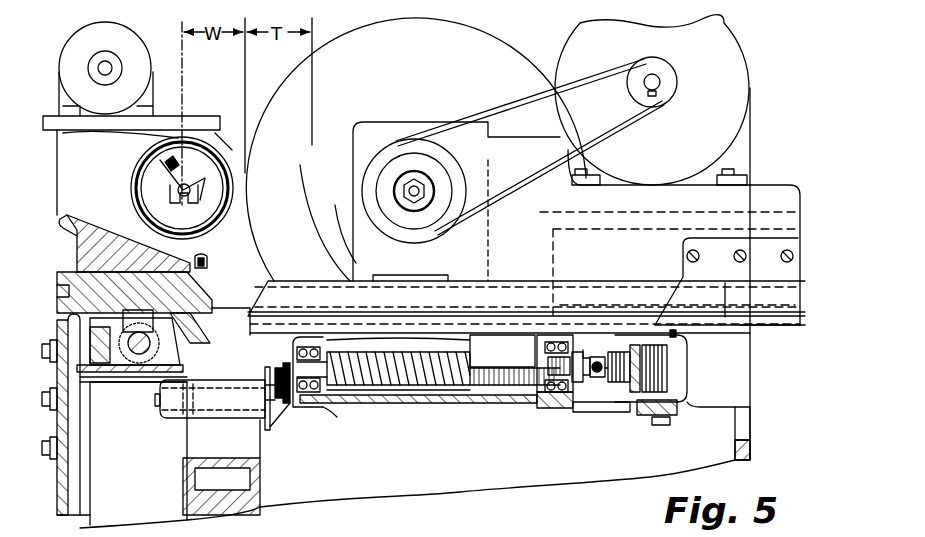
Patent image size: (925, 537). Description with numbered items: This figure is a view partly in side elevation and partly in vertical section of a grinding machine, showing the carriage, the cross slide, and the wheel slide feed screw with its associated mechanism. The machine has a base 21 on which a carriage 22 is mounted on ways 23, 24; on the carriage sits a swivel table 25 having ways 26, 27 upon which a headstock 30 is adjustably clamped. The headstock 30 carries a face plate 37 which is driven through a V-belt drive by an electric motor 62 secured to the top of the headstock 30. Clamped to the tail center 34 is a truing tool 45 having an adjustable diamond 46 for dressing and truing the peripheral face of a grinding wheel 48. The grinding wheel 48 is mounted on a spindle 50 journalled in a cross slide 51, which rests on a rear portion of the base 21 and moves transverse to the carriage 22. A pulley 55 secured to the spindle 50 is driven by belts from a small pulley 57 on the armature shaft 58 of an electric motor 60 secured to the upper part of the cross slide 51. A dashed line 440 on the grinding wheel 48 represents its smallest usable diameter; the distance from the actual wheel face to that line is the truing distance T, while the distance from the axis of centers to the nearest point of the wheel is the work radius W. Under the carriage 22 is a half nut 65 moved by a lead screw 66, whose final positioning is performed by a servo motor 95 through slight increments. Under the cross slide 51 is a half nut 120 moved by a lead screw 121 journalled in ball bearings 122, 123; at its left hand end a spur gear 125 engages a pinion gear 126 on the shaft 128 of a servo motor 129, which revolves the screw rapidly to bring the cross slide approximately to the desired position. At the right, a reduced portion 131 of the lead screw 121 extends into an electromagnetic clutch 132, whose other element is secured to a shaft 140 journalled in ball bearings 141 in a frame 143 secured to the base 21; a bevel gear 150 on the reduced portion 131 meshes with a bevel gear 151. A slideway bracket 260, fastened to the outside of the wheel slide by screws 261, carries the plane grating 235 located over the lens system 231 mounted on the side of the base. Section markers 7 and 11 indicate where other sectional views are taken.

The electric motor 62 is at (82, 42).
The section line 7 is at (165, 72).
The headstock 30 is at (70, 165).
The face plate 37 is at (150, 172).
The truing tool 45 is at (216, 154).
The tail center 34 is at (174, 186).
The adjustable diamond 46 is at (188, 209).
The way 26 is at (62, 223).
The swivel table 25 is at (107, 233).
The way 27 is at (207, 266).
The carriage 22 is at (66, 272).
The way 24 is at (213, 311).
The way 23 is at (74, 332).
The half nut 65 is at (132, 346).
The lead screw 66 is at (138, 350).
The servo motor 129 is at (176, 405).
The grinding wheel 48 is at (471, 52).
The dashed line 440 is at (330, 142).
The spindle 50 is at (420, 188).
The pulley 55 is at (432, 228).
The small pulley 57 is at (636, 118).
The electric motor 60 is at (741, 78).
The armature shaft 58 is at (660, 82).
The slideway bracket 260 is at (788, 327).
The screws 261 is at (696, 261).
The plane grating 235 is at (758, 332).
The section line 11 is at (665, 295).
The spur gear 125 is at (283, 322).
The cross slide 51 is at (383, 253).
The half nut 120 is at (507, 343).
The ball bearing 122 is at (327, 407).
The pinion gear 126 is at (288, 430).
The shaft 128 is at (284, 432).
The lead screw 121 is at (413, 380).
The base 21 is at (483, 398).
The ball bearing 123 is at (543, 410).
The electromagnetic clutch 132 is at (618, 384).
The bevel gear 150 is at (597, 380).
The bevel gear 151 is at (583, 350).
The reduced portion 131 is at (605, 350).
The shaft 140 is at (629, 395).
The servo motor 95 is at (655, 405).
The frame 143 is at (683, 412).
The ball bearings 141 is at (683, 372).
The lens system 231 is at (676, 335).